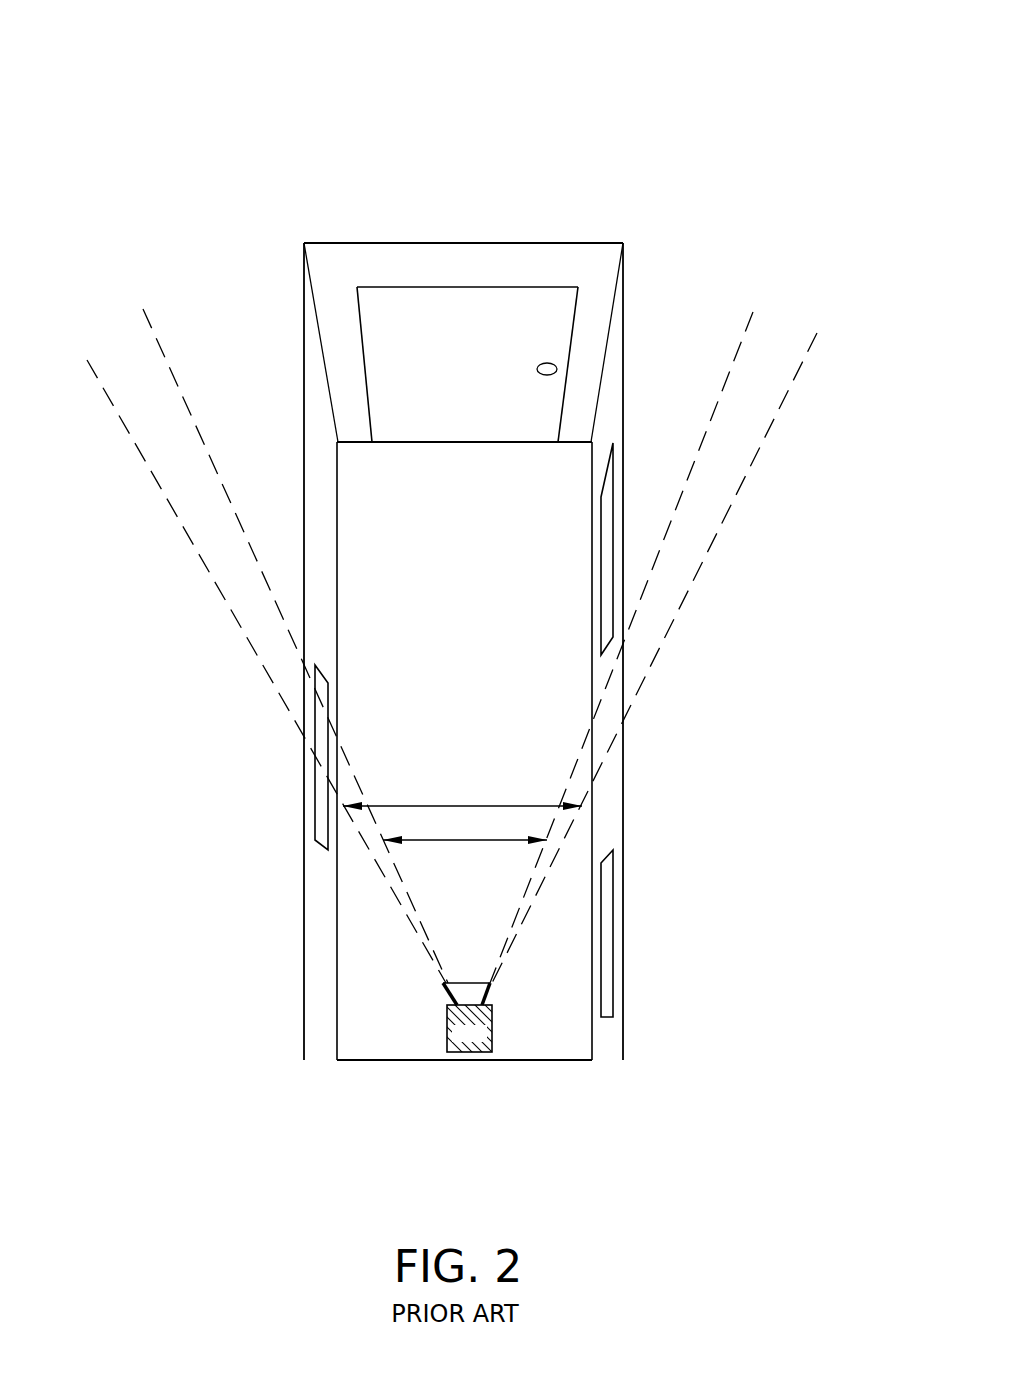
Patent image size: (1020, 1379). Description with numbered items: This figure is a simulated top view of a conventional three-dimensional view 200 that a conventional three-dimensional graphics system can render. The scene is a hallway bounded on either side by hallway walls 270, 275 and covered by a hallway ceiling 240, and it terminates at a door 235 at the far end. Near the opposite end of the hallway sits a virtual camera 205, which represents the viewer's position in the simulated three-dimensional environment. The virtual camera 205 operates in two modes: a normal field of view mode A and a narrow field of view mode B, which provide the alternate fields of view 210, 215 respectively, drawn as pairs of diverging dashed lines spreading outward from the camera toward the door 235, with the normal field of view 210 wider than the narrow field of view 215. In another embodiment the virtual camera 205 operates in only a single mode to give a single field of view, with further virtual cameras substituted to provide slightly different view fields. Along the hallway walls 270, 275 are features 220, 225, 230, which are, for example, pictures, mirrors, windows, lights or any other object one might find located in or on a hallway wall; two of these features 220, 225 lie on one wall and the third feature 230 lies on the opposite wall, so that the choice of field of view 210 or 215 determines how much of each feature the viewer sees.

The 3D view 200 is at (533, 40).
The virtual camera 205 is at (468, 1052).
The field of view 210 is at (173, 515).
The field of view 215 is at (163, 355).
The feature 220 is at (630, 519).
The feature 225 is at (630, 889).
The feature 230 is at (290, 712).
The door 235 is at (395, 302).
The hallway ceiling 240 is at (567, 677).
The hallway wall 270 is at (303, 913).
The hallway wall 275 is at (622, 773).